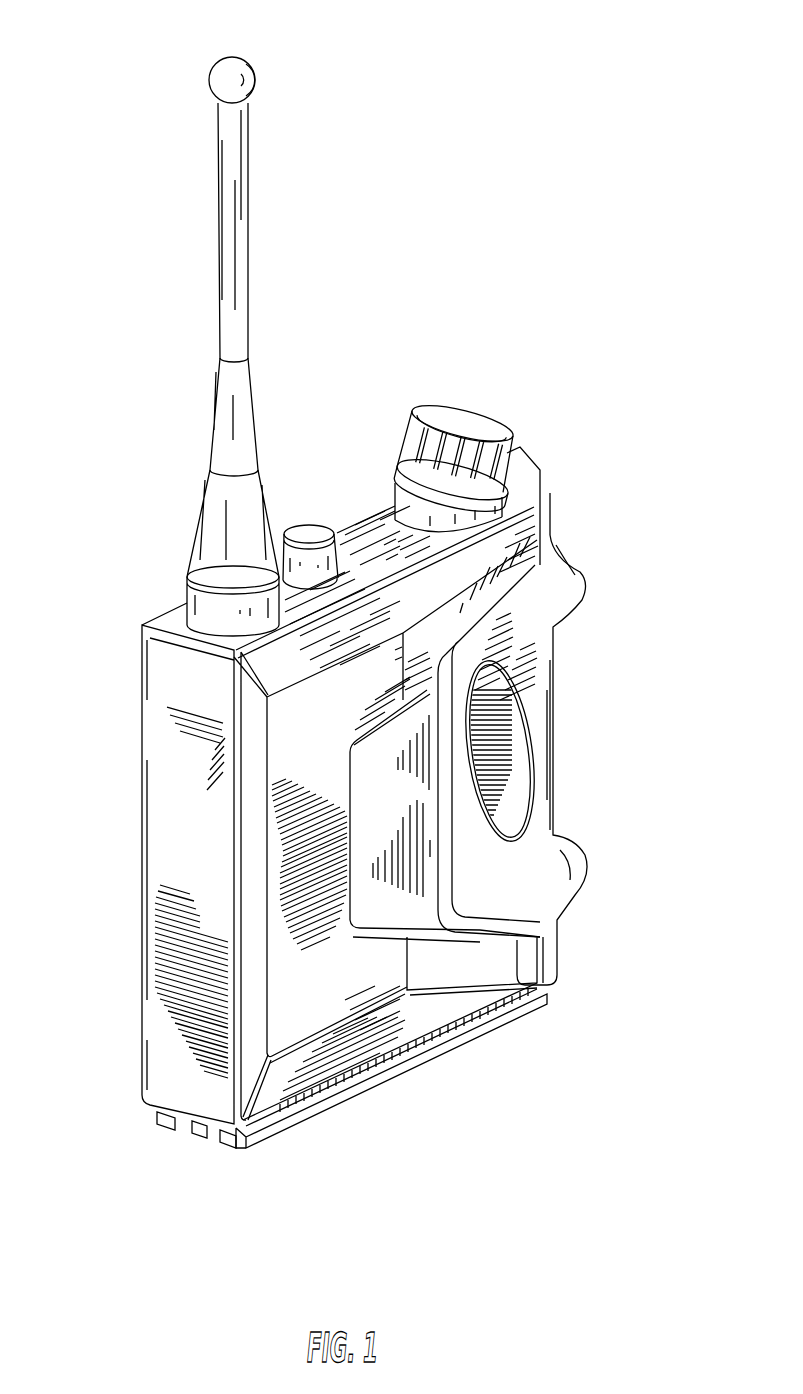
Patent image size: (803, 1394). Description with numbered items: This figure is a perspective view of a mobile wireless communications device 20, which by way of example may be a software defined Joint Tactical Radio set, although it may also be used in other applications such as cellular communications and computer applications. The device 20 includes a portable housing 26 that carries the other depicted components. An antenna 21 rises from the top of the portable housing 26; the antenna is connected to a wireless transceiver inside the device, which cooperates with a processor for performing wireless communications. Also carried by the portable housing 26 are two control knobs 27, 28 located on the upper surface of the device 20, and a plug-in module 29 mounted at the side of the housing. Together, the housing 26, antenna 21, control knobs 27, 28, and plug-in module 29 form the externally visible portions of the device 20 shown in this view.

The mobile wireless communications device 20 is at (478, 210).
The antenna 21 is at (213, 66).
The portable housing 26 is at (147, 837).
The control knob 27 is at (307, 532).
The control knob 28 is at (483, 425).
The plug-in module 29 is at (553, 750).